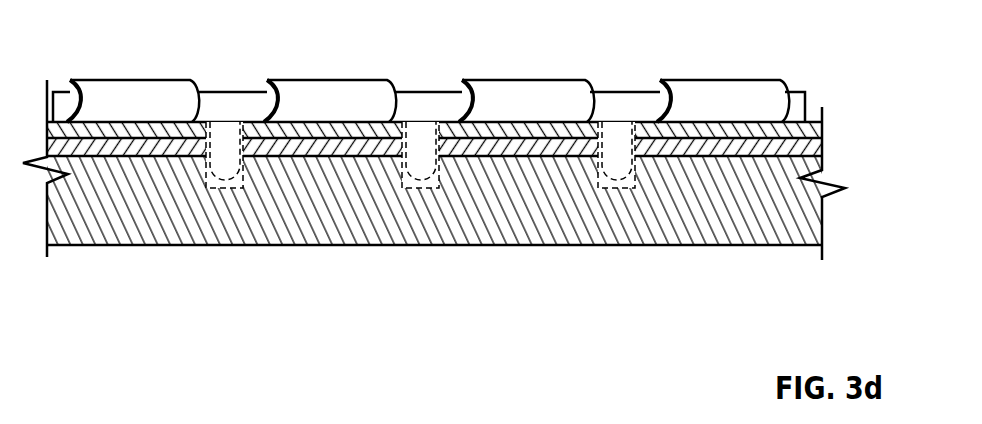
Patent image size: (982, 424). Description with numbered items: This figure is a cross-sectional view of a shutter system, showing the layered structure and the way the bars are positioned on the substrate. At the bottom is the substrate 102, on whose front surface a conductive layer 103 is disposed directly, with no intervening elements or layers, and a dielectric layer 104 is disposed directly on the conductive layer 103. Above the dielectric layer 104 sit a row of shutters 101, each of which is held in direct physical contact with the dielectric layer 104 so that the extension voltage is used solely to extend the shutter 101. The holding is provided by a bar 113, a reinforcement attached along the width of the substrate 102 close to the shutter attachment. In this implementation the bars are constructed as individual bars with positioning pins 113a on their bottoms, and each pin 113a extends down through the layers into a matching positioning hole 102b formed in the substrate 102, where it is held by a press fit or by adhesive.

The shutter 101 is at (327, 80).
The bar 113 is at (218, 93).
The positioning pin 113a is at (226, 173).
The substrate 102 is at (768, 218).
The positioning hole 102b is at (203, 173).
The conductive layer 103 is at (660, 146).
The dielectric layer 104 is at (485, 132).